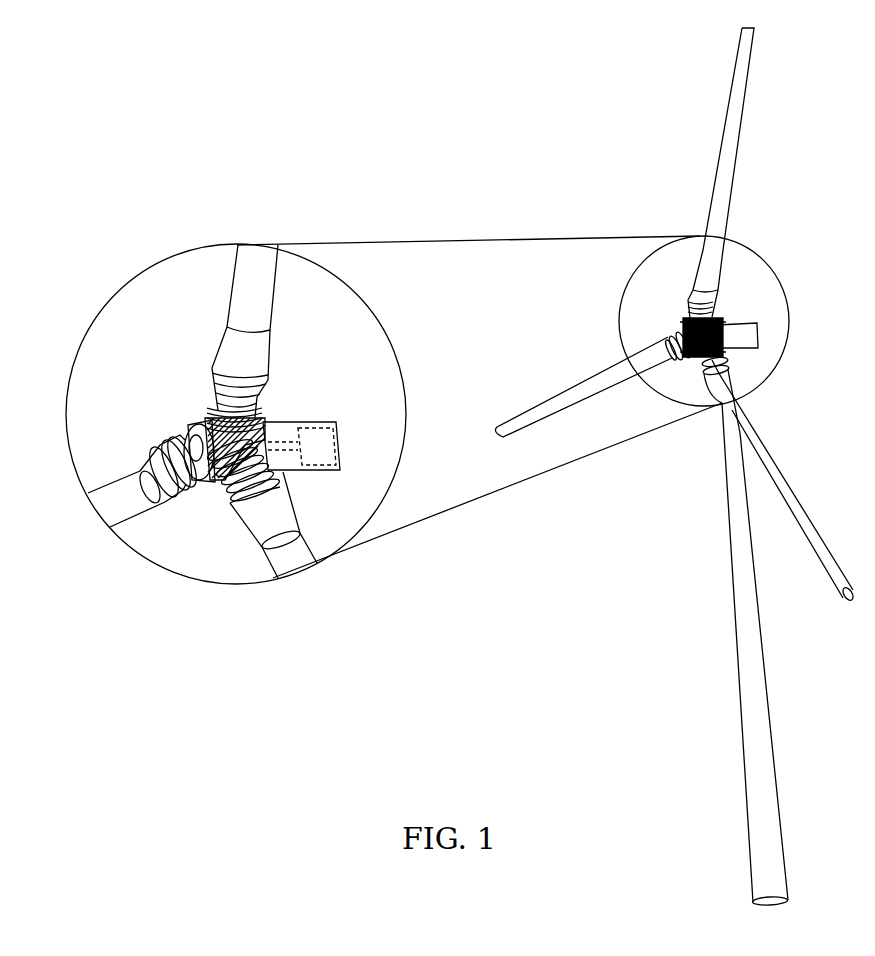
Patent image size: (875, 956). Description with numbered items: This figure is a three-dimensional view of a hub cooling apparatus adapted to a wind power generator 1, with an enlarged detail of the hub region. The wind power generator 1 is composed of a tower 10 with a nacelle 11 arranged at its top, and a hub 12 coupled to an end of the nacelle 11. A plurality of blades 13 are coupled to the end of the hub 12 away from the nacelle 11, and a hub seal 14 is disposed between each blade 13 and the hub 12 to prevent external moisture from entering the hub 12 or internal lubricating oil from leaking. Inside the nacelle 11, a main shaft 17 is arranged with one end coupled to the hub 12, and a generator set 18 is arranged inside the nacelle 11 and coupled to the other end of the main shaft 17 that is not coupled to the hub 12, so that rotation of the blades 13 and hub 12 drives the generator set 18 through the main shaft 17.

The wind power generator 1 is at (297, 372).
The tower 10 is at (296, 497).
The nacelle 11 is at (328, 427).
The hub 12 is at (202, 420).
The blades 13 is at (125, 505).
The hub seals 14 is at (215, 488).
The main shaft 17 is at (283, 442).
The generator set 18 is at (318, 428).